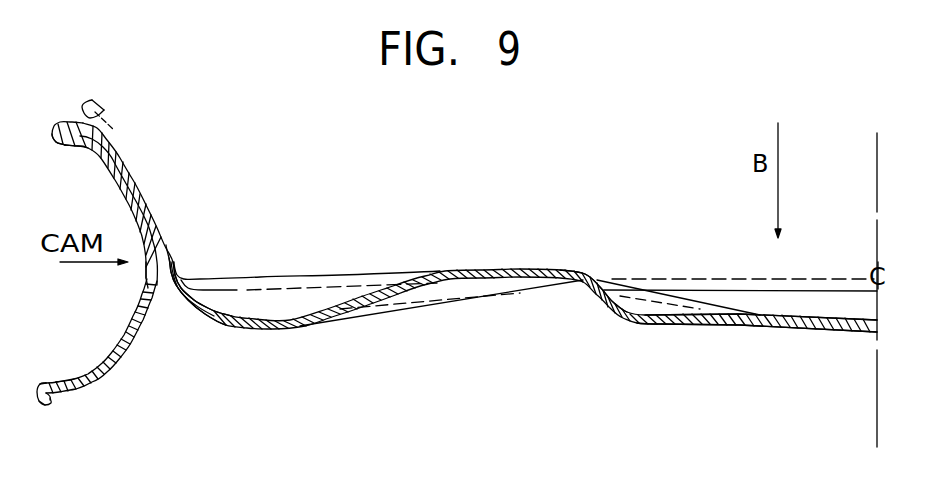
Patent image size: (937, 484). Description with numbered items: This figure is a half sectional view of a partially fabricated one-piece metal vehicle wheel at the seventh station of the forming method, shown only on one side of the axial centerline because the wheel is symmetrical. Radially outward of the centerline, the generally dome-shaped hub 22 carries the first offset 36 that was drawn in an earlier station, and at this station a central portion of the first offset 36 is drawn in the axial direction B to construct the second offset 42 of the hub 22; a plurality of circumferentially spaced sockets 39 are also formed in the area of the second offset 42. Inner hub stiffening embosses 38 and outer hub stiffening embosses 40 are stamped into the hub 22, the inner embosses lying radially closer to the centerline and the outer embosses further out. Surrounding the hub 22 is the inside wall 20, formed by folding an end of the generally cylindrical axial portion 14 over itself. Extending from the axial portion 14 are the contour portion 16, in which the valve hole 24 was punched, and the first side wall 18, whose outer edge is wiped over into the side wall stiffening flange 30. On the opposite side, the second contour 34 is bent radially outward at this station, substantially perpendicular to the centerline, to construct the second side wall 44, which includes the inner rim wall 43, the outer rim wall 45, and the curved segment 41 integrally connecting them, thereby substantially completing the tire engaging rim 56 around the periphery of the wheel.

The axial portion 14 is at (146, 274).
The contour portion 16 is at (148, 312).
The first side wall 18 is at (75, 393).
The inside wall 20 is at (172, 233).
The hub 22 is at (267, 331).
The valve hole 24 is at (126, 347).
The side wall stiffening flange 30 is at (57, 405).
The second contour 34 is at (137, 156).
The first offset 36 is at (512, 270).
The inner hub stiffening embosses 38 is at (430, 308).
The sockets 39 is at (653, 326).
The outer hub stiffening embosses 40 is at (312, 278).
The curved segment 41 is at (52, 114).
The second offset 42 is at (650, 276).
The inner rim wall 43 is at (70, 148).
The second side wall 44 is at (63, 148).
The outer rim wall 45 is at (66, 117).
The tire engaging rim 56 is at (66, 372).